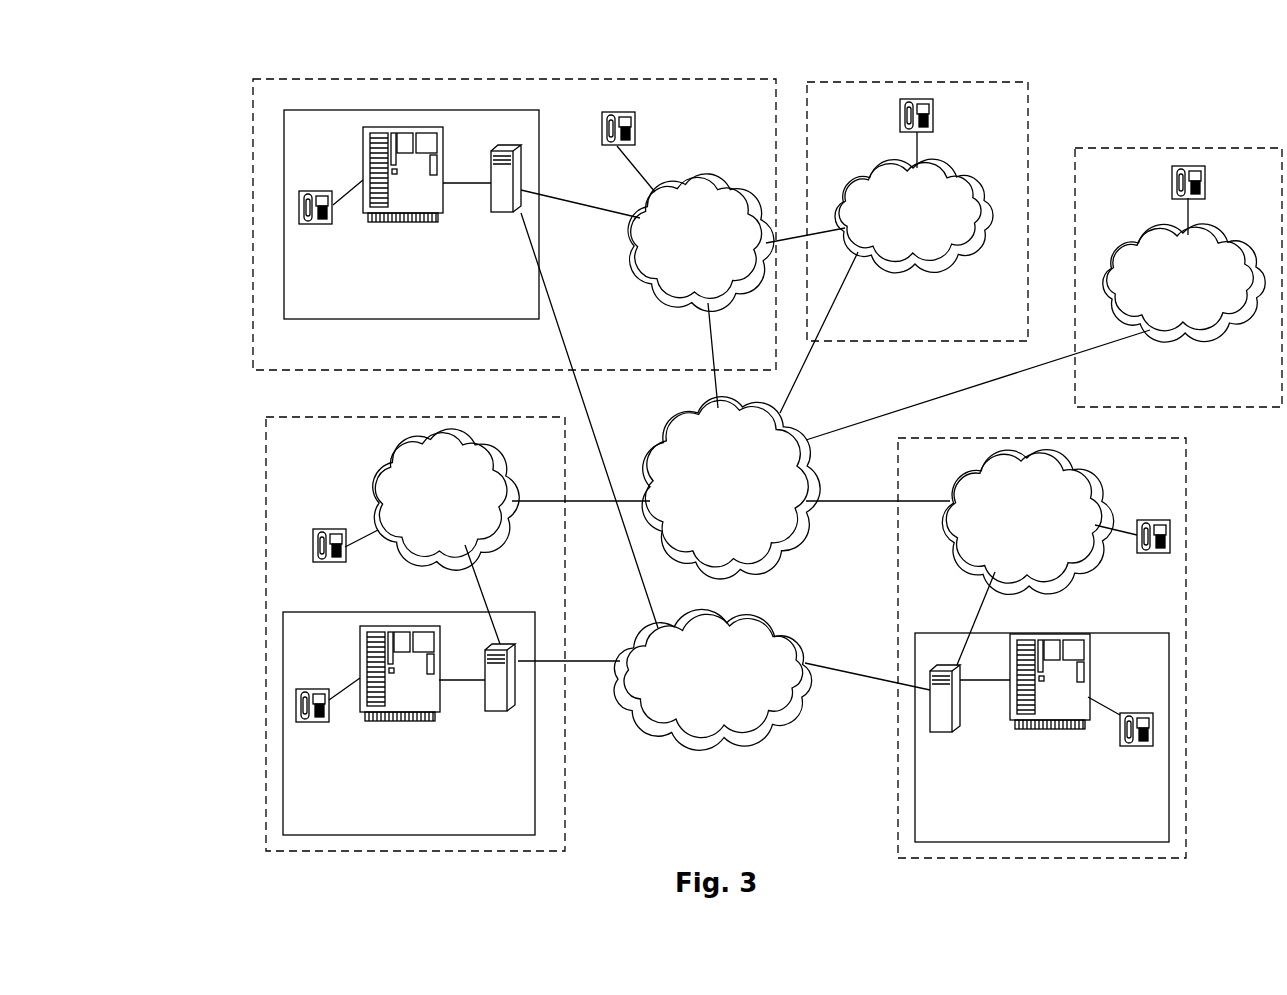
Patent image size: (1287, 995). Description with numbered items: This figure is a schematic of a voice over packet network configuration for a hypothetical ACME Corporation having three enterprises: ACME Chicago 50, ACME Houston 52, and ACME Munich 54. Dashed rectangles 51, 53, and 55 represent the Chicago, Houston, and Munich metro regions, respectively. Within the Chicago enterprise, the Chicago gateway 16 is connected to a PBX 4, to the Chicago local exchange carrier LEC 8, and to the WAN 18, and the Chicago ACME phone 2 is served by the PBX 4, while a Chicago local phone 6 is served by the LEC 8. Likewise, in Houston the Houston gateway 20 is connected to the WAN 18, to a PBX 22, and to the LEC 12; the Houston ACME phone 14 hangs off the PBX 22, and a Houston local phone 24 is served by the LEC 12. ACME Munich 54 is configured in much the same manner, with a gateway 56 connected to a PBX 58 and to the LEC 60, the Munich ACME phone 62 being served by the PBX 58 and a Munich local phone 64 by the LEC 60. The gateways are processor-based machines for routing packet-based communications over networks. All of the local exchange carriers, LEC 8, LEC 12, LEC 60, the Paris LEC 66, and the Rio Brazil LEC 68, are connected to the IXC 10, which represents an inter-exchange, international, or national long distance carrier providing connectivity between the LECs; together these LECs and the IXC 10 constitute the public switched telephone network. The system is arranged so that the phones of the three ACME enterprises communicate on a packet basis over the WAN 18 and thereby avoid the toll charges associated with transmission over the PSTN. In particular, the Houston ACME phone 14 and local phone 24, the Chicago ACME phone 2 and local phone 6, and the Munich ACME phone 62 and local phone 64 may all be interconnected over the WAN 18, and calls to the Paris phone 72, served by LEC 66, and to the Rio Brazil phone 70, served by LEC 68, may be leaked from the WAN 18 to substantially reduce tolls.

The Chicago ACME phone 2 is at (318, 689).
The PBX 4 is at (442, 720).
The Chicago local phone 6 is at (320, 529).
The LEC 8 is at (378, 494).
The IXC 10 is at (778, 566).
The LEC 12 is at (976, 466).
The Houston ACME phone 14 is at (1140, 747).
The Chicago gateway 16 is at (500, 711).
The WAN 18 is at (672, 736).
The Houston gateway 20 is at (930, 682).
The PBX 22 is at (1008, 705).
The Houston local phone 24 is at (1152, 520).
The ACME Chicago 50 is at (283, 736).
The Chicago metro region 51 is at (266, 637).
The ACME Houston 52 is at (1169, 750).
The Houston metro region 53 is at (1186, 648).
The ACME Munich 54 is at (453, 110).
The Munich metro region 55 is at (353, 79).
The gateway 56 is at (505, 213).
The PBX 58 is at (363, 163).
The LEC 60 is at (705, 180).
The Munich ACME phone 62 is at (299, 205).
The Munich local phone 64 is at (619, 112).
The LEC 66 is at (978, 184).
The LEC 68 is at (1246, 262).
The Rio Brazil phone 70 is at (1180, 166).
The Paris phone 72 is at (918, 99).